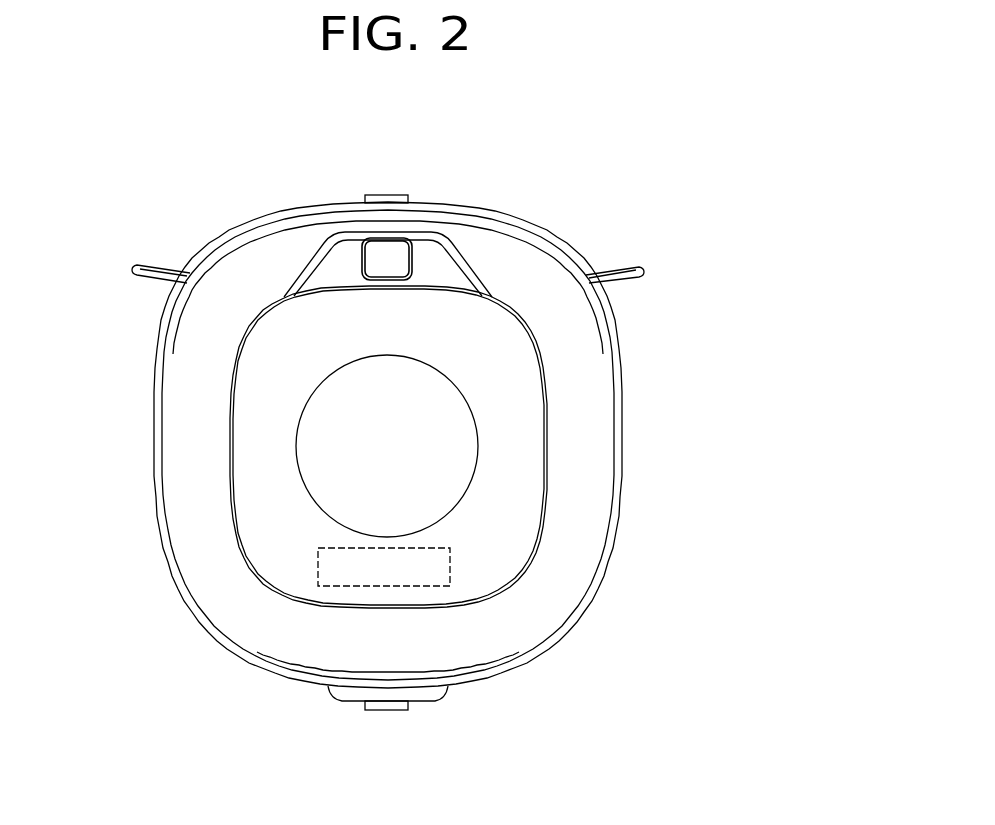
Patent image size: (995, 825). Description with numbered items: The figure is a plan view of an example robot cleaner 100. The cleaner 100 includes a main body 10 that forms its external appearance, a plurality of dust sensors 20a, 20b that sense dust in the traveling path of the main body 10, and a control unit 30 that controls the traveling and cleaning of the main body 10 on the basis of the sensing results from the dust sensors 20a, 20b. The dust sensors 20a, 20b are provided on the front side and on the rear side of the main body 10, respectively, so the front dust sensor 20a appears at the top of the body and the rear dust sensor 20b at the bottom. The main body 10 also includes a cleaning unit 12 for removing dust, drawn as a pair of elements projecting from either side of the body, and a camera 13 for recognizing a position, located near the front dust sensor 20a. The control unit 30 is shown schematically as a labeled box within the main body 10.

The cleaner 100 is at (577, 194).
The main body 10 is at (603, 440).
The cleaning unit 12 is at (134, 271).
The camera 13 is at (370, 258).
The dust sensor 20a is at (387, 195).
The dust sensor 20b is at (386, 710).
The control unit 30 is at (427, 586).